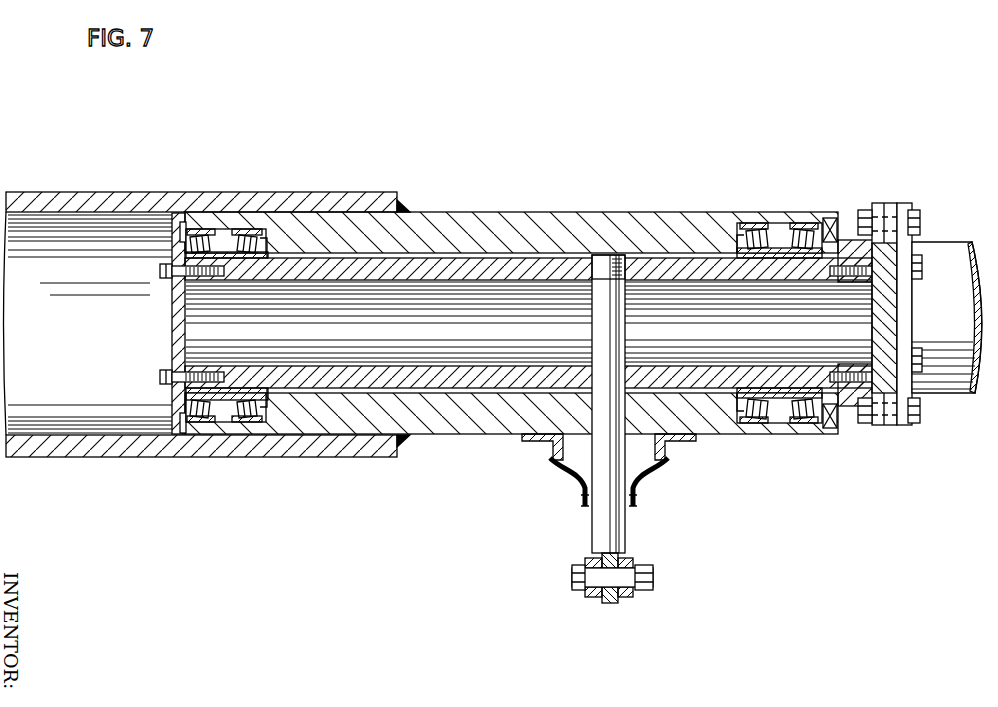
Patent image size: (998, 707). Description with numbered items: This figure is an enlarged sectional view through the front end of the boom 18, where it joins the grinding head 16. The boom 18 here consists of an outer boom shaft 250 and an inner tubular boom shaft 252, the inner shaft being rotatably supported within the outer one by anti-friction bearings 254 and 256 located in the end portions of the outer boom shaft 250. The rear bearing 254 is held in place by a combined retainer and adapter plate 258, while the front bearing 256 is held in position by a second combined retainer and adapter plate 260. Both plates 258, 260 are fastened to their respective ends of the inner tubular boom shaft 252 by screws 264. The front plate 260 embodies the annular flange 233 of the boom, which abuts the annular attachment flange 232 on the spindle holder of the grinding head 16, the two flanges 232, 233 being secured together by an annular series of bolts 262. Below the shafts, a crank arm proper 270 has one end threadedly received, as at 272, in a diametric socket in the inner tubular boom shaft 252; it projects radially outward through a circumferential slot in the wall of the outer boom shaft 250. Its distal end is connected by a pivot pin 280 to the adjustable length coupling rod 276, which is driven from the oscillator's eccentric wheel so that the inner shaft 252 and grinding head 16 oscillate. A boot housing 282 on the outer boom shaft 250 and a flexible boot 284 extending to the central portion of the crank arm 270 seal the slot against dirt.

The grinding head 16 is at (946, 291).
The boom 18 is at (99, 194).
The annular attachment flange 232 is at (905, 424).
The annular flange 233 is at (886, 424).
The outer boom shaft 250 is at (495, 212).
The inner tubular boom shaft 252 is at (424, 266).
The anti-friction bearing 254 is at (230, 418).
The anti-friction bearing 256 is at (782, 403).
The combined retainer and adapter plate 258 is at (174, 322).
The combined retainer and adapter plate 260 is at (893, 323).
The bolts 262 is at (918, 268).
The screws 264 is at (162, 378).
The crank arm proper 270 is at (616, 487).
The threaded connection 272 is at (612, 256).
The adjustable length coupling rod 276 is at (628, 598).
The pivot pin 280 is at (625, 576).
The boot housing 282 is at (538, 444).
The flexible boot 284 is at (568, 478).